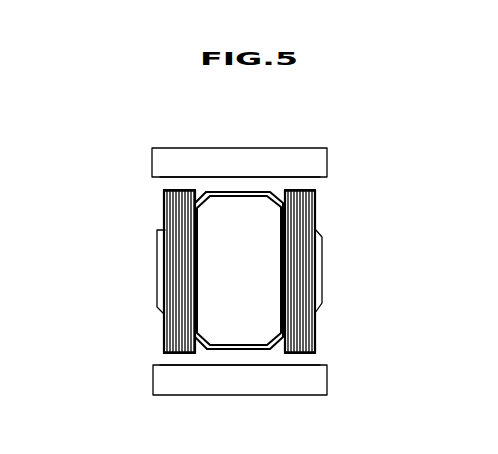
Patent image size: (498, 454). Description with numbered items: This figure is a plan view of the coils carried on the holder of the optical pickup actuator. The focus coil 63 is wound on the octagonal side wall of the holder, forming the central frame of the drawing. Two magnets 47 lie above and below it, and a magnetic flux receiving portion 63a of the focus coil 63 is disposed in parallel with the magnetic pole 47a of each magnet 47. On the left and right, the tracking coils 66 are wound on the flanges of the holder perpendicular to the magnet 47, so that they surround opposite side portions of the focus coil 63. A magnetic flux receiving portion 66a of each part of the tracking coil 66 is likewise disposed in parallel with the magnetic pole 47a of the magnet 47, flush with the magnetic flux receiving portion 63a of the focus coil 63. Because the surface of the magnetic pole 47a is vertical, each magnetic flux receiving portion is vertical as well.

The magnet 47 is at (315, 164).
The magnetic pole 47a is at (270, 178).
The focus coil 63 is at (323, 300).
The magnetic flux receiving portion 63a is at (233, 190).
The tracking coil 66 is at (185, 340).
The magnetic flux receiving portion 66a is at (180, 188).